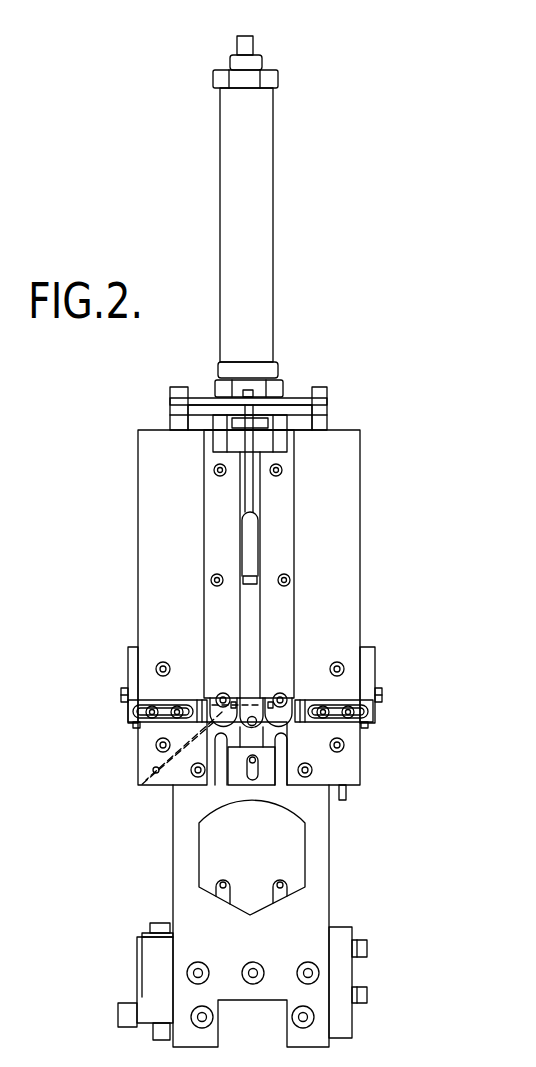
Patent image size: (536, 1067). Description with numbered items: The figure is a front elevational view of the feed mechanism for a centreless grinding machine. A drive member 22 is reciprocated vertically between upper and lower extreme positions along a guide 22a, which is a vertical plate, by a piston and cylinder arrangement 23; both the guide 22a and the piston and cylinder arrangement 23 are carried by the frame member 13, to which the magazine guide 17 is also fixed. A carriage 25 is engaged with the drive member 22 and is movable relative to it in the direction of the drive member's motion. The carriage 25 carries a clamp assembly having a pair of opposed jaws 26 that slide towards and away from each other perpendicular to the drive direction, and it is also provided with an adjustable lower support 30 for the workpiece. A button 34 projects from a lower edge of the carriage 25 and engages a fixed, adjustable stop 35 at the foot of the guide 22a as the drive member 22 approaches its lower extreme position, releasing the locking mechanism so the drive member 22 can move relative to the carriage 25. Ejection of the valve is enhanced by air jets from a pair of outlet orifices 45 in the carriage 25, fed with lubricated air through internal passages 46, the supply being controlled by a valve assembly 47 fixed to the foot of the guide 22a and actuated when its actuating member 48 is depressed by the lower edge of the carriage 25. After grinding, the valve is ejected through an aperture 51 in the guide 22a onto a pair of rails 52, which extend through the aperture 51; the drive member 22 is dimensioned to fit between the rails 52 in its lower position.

The frame member 13 is at (297, 397).
The guide 17 is at (248, 495).
The drive member 22 is at (250, 613).
The guide 22a is at (322, 893).
The piston and cylinder arrangement 23 is at (268, 318).
The carriage 25 is at (343, 548).
The jaws 26 is at (130, 713).
The lower support 30 is at (263, 762).
The button 34 is at (347, 793).
The stop 35 is at (343, 972).
The outlet orifices 45 is at (256, 703).
The internal passages 46 is at (140, 760).
The valve assembly 47 is at (140, 965).
The actuating member 48 is at (155, 925).
The aperture 51 is at (297, 843).
The rails 52 is at (281, 880).